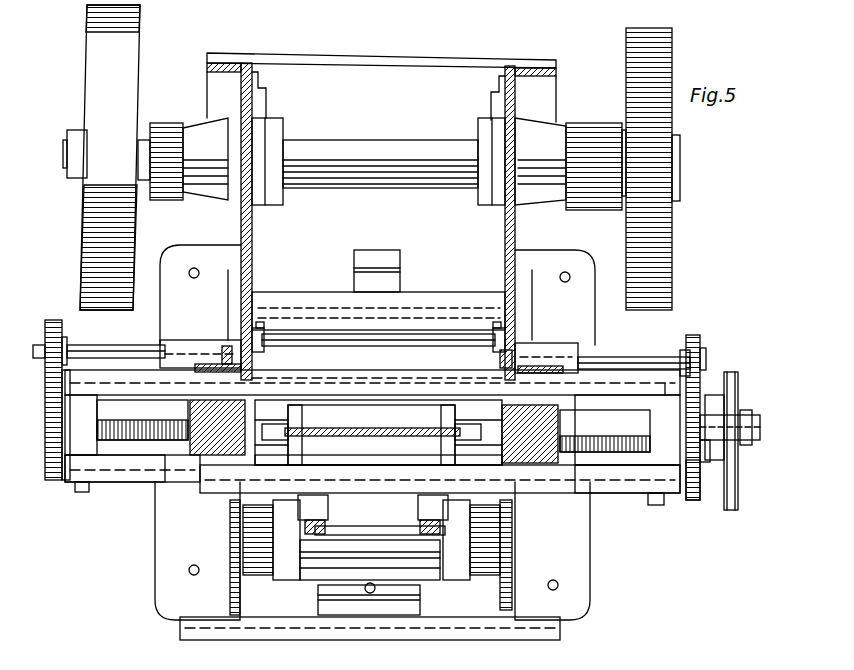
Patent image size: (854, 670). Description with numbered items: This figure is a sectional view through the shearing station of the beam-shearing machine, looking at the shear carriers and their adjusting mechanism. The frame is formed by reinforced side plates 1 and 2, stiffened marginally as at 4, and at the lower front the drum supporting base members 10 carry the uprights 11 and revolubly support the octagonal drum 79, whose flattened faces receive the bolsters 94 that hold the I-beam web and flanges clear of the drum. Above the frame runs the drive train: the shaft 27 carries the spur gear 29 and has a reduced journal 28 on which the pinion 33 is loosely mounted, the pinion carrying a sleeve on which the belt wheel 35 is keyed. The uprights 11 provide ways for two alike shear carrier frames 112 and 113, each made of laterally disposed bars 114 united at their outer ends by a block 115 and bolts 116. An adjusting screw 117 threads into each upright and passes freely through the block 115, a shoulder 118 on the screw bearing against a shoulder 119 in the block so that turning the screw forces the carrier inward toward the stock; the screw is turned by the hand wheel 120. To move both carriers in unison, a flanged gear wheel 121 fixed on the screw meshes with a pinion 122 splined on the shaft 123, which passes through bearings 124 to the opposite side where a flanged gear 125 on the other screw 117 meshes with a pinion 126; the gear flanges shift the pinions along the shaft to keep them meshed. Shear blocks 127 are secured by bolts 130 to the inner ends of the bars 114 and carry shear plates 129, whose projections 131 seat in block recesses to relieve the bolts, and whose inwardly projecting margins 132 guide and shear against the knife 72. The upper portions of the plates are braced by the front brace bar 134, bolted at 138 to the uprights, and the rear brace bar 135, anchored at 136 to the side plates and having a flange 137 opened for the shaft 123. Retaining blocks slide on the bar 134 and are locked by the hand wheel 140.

The side plate 1 is at (515, 232).
The side plate 2 is at (241, 232).
The marginal stiffening brace 4 is at (240, 98).
The drum supporting base member 10 is at (560, 582).
The upright 11 is at (185, 470).
The shaft 27 is at (370, 148).
The reduced journal 28 is at (590, 123).
The spur gear 29 is at (660, 176).
The pinion 33 is at (170, 123).
The belt wheel 35 is at (86, 98).
The shearing knife 72 is at (378, 462).
The drum 79 is at (280, 560).
The bolster 94 is at (408, 608).
The shear carrier frame 112 is at (640, 493).
The shear carrier frame 113 is at (103, 470).
The bar 114 is at (700, 380).
The block 115 is at (700, 492).
The bolt 116 is at (655, 505).
The adjusting screw 117 is at (130, 440).
The shoulder 118 is at (700, 415).
The shoulder 119 is at (712, 395).
The hand wheel 120 is at (738, 486).
The flanged gear wheel 121 is at (705, 500).
The pinion 122 is at (700, 345).
The shaft 123 is at (637, 358).
The bearing 124 is at (198, 345).
The flanged gear 125 is at (54, 480).
The pinion 126 is at (52, 320).
The shear block 127 is at (298, 410).
The shear plate 129 is at (452, 428).
The bolt 130 is at (540, 500).
The projection 131 is at (470, 420).
The inwardly projecting margin 132 is at (372, 445).
The front brace bar 134 is at (245, 490).
The rear brace bar 135 is at (395, 375).
The anchorage 136 is at (258, 368).
The flange 137 is at (300, 348).
The bolting point 138 is at (362, 527).
The hand wheel 140 is at (318, 535).